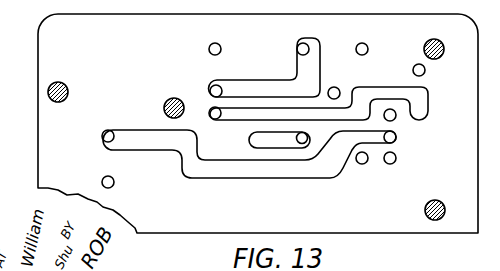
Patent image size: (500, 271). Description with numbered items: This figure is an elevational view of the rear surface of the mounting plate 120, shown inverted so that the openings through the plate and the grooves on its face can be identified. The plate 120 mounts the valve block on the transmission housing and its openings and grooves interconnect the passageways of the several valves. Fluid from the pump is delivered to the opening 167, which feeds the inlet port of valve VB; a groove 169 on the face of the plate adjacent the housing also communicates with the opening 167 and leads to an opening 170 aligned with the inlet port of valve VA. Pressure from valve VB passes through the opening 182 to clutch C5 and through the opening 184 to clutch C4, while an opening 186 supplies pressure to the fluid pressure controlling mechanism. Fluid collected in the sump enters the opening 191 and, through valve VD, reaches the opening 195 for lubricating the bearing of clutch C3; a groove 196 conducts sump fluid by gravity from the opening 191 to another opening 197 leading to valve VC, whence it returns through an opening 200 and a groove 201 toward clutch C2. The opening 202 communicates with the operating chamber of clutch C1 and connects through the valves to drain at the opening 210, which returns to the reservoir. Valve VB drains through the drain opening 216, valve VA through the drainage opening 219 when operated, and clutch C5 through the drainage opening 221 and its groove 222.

The mounting plate 120 is at (48, 58).
The opening 167 is at (396, 140).
The groove 169 is at (302, 169).
The opening 170 is at (112, 131).
The opening 182 is at (396, 118).
The opening 184 is at (396, 161).
The opening 186 is at (362, 164).
The opening 191 is at (320, 33).
The opening 195 is at (425, 71).
The groove 196 is at (280, 67).
The opening 197 is at (211, 88).
The opening 200 is at (210, 118).
The groove 201 is at (255, 118).
The opening 202 is at (357, 72).
The opening 210 is at (212, 44).
The drain opening 216 is at (385, 33).
The drainage opening 219 is at (114, 185).
The drainage opening 221 is at (306, 133).
The groove 222 is at (281, 139).